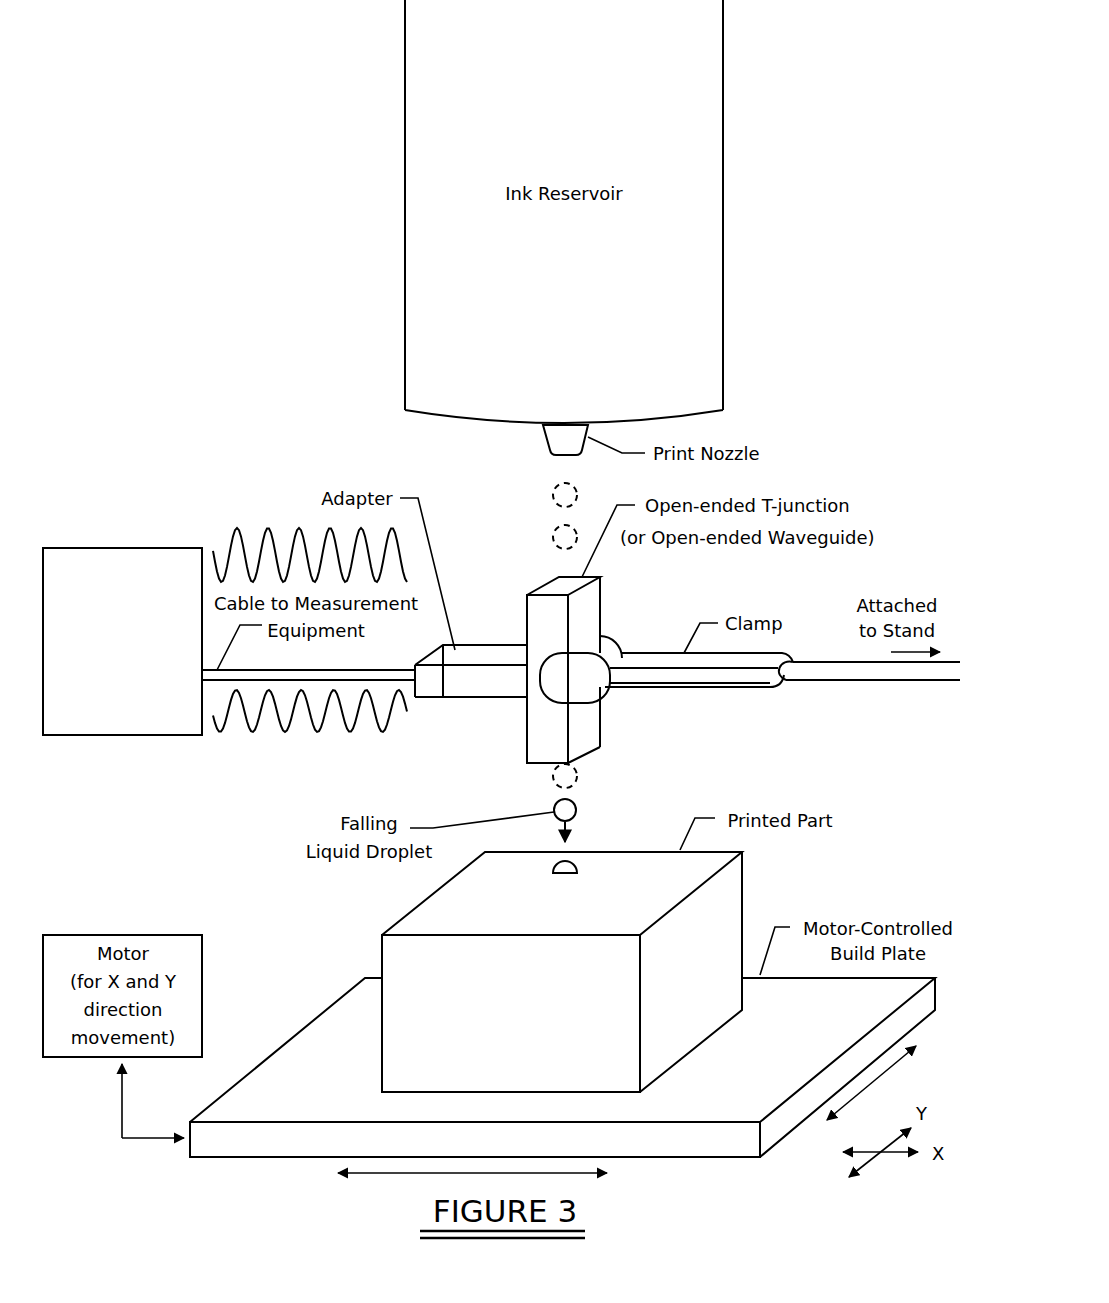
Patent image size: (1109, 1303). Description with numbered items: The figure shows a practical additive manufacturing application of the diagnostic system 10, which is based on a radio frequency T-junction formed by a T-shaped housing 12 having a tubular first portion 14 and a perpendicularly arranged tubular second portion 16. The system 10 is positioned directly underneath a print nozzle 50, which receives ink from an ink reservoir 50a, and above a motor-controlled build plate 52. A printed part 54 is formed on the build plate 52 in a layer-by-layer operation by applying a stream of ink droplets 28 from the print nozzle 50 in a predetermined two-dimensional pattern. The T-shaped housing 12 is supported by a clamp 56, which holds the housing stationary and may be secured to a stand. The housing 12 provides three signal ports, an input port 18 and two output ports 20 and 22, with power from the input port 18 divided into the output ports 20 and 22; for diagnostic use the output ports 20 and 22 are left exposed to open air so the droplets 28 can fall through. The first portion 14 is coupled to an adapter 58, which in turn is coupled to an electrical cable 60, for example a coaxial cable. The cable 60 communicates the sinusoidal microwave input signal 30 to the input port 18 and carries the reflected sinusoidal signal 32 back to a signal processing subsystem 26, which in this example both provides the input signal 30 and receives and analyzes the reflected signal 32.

The diagnostic system 10 is at (324, 448).
The T-shaped housing 12 is at (587, 725).
The tubular first portion 14 is at (483, 680).
The tubular second portion 16 is at (592, 605).
The input port 18 is at (438, 697).
The output port 20 is at (552, 575).
The output port 22 is at (582, 757).
The signal processing subsystem 26 is at (110, 715).
The ink droplets 28 is at (552, 493).
The sinusoidal microwave input signal 30 is at (237, 528).
The reflected sinusoidal signal 32 is at (262, 730).
The print nozzle 50 is at (553, 432).
The ink reservoir 50a is at (548, 242).
The motor-controlled build plate 52 is at (308, 1062).
The printed part 54 is at (408, 960).
The clamp 56 is at (735, 678).
The adapter 58 is at (457, 650).
The electrical cable 60 is at (362, 675).